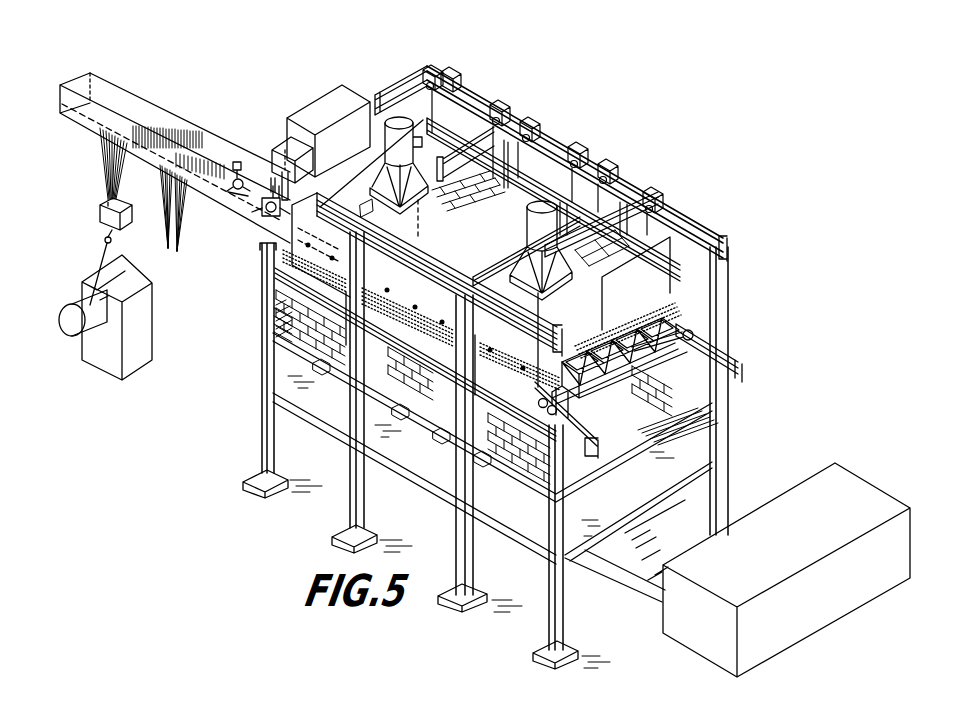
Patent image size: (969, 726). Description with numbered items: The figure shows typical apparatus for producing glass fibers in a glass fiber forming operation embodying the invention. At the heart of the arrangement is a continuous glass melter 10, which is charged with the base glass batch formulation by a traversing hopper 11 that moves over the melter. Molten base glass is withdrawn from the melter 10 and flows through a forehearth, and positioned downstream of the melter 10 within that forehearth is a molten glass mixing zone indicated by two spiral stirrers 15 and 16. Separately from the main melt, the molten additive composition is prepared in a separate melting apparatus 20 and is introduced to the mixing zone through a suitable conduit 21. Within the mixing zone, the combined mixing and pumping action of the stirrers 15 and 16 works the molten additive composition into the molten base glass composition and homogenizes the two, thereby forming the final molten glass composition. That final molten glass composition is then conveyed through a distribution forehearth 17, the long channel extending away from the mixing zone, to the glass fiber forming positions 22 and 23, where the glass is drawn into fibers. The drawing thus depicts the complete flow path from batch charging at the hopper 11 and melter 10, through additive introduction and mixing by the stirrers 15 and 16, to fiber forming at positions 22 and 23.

The continuous glass melter 10 is at (616, 415).
The traversing hopper 11 is at (636, 349).
The spiral stirrer 15 is at (275, 205).
The spiral stirrer 16 is at (234, 172).
The distribution forehearth 17 is at (182, 110).
The separate melting apparatus 20 is at (319, 92).
The conduit 21 is at (271, 178).
The glass fiber forming position 22 is at (194, 221).
The glass fiber forming position 23 is at (103, 177).